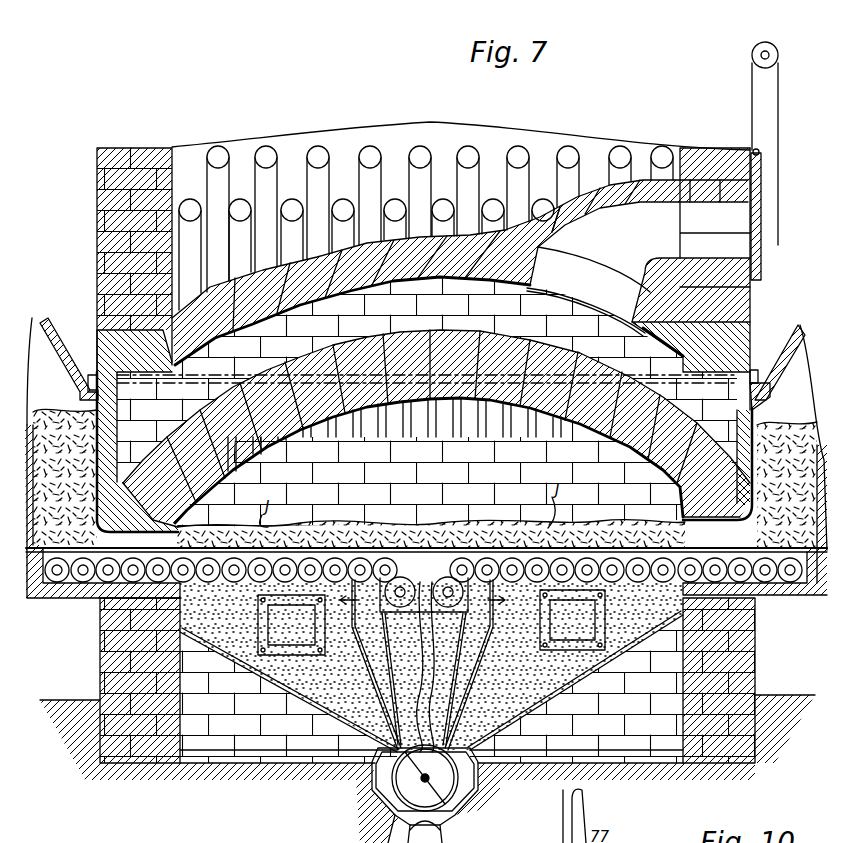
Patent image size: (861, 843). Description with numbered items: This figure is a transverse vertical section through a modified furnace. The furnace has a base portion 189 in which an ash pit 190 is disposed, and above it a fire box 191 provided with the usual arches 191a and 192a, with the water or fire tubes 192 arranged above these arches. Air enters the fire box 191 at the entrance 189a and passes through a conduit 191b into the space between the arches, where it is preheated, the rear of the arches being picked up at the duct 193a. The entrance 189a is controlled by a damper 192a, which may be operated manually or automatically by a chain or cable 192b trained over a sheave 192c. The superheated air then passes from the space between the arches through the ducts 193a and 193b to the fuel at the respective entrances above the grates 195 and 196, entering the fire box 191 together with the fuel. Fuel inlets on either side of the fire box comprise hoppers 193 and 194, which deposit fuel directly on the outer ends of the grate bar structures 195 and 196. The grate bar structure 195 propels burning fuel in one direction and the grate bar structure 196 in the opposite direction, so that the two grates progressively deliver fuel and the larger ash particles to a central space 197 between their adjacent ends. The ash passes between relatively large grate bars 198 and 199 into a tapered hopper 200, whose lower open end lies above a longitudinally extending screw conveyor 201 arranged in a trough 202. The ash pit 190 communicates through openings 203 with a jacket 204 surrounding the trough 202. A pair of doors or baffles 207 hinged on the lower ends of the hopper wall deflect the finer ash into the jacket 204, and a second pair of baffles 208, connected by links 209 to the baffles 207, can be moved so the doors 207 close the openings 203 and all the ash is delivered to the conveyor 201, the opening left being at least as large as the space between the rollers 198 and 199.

The base portion 189 is at (710, 658).
The air entrance 189a is at (708, 220).
The ash pit 190 is at (563, 693).
The fire box 191 is at (430, 462).
The arch 191a is at (460, 272).
The conduit 191b is at (610, 180).
The water or fire tubes 192 is at (420, 150).
The arch / damper 192a is at (762, 163).
The chain or cable 192b is at (778, 80).
The sheave 192c is at (770, 46).
The hopper 193 is at (60, 380).
The duct 193a is at (436, 306).
The duct 193b is at (735, 445).
The hopper 194 is at (800, 367).
The grate bar structure 195 is at (75, 578).
The grate bar structure 196 is at (783, 577).
The central space 197 is at (431, 525).
The grate bar 198 is at (395, 602).
The grate bar 199 is at (452, 603).
The tapered hopper 200 is at (431, 666).
The screw conveyor 201 is at (440, 785).
The trough 202 is at (450, 812).
The openings 203 is at (470, 770).
The jacket 204 is at (385, 806).
The doors or baffles 207 is at (425, 679).
The baffles 208 is at (475, 752).
The links 209 is at (470, 698).